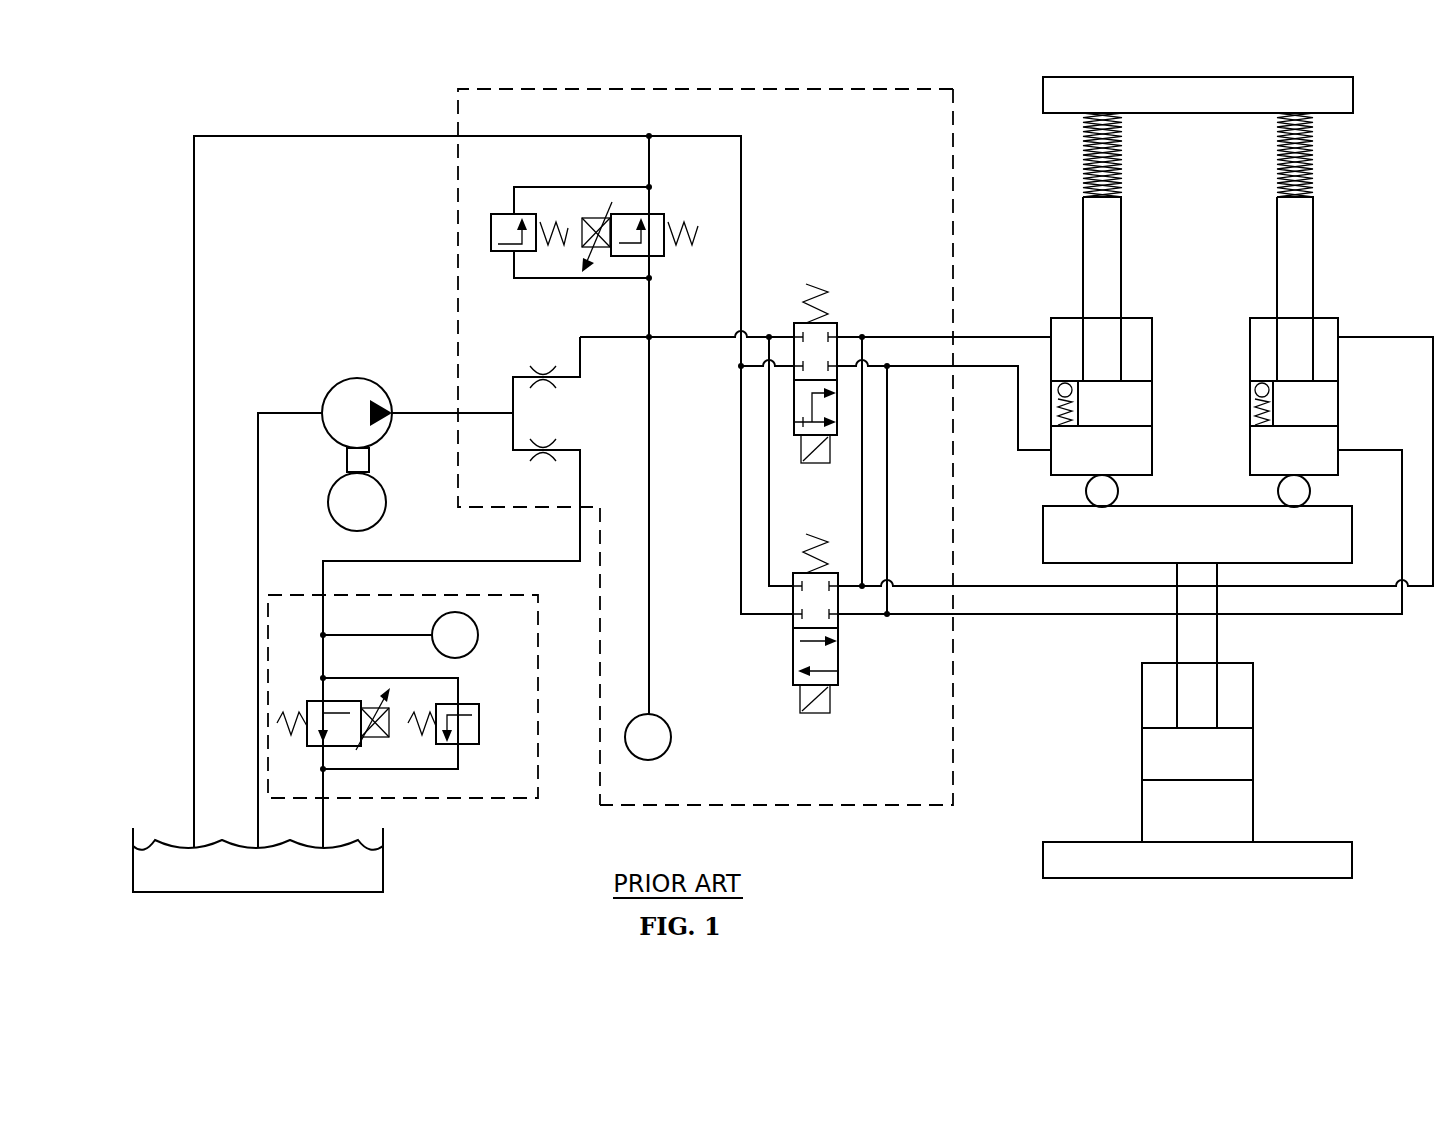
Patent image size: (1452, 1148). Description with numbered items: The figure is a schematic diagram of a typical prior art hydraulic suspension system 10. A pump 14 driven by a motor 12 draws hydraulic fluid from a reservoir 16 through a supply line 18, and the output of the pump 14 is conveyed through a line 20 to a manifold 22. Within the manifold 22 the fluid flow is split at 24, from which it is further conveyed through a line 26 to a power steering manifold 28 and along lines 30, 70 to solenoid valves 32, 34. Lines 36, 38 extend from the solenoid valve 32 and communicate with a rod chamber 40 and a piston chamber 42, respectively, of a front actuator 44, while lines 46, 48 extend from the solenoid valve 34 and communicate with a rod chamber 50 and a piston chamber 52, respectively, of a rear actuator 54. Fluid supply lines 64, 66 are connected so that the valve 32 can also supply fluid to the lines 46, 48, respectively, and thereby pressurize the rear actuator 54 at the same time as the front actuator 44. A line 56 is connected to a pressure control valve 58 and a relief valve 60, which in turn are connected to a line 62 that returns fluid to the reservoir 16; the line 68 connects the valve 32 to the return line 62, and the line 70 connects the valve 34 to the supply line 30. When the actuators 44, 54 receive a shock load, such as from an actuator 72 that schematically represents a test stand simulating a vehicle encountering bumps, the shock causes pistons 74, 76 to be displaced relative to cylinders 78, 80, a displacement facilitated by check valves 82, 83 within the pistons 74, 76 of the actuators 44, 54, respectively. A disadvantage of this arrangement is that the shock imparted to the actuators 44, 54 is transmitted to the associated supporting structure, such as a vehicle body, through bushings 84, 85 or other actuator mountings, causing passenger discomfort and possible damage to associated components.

The suspension system 10 is at (962, 818).
The motor 12 is at (328, 505).
The pump 14 is at (330, 390).
The reservoir 16 is at (380, 865).
The supply line 18 is at (258, 492).
The line 20 is at (425, 413).
The manifold 22 is at (548, 87).
The flow split 24 is at (572, 418).
The line 26 is at (552, 565).
The power steering manifold 28 is at (540, 745).
The supply line 30 is at (580, 345).
The solenoid valve 32 is at (838, 325).
The solenoid valve 34 is at (840, 665).
The line 36 is at (982, 337).
The line 38 is at (973, 366).
The rod chamber 40 is at (1135, 330).
The piston chamber 42 is at (1143, 440).
The front actuator 44 is at (1046, 286).
The line 46 is at (987, 586).
The line 48 is at (980, 614).
The rod chamber 50 is at (1325, 328).
The piston chamber 52 is at (1330, 440).
The rear actuator 54 is at (1243, 290).
The line 56 is at (651, 333).
The pressure control valve 58 is at (653, 210).
The relief valve 60 is at (508, 252).
The return line 62 is at (312, 136).
The fluid supply line 64 is at (862, 462).
The fluid supply line 66 is at (887, 462).
The line 68 is at (741, 462).
The line 70 is at (769, 455).
The actuator 72 is at (1208, 650).
The piston 74 is at (1135, 419).
The piston 76 is at (1323, 419).
The cylinder 78 is at (1138, 477).
The cylinder 80 is at (1327, 477).
The check valve 82 is at (1080, 410).
The check valve 83 is at (1273, 410).
The bushing 84 is at (1099, 497).
The bushing 85 is at (1300, 497).